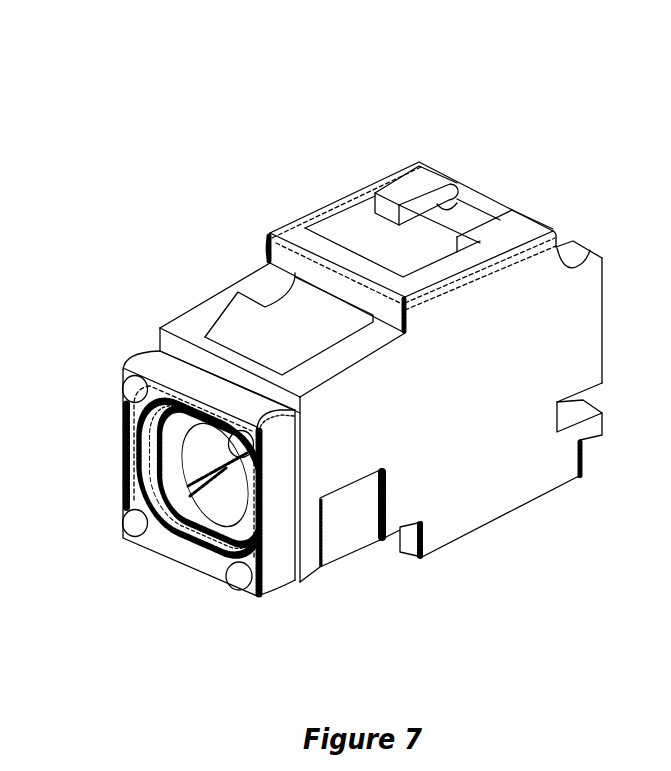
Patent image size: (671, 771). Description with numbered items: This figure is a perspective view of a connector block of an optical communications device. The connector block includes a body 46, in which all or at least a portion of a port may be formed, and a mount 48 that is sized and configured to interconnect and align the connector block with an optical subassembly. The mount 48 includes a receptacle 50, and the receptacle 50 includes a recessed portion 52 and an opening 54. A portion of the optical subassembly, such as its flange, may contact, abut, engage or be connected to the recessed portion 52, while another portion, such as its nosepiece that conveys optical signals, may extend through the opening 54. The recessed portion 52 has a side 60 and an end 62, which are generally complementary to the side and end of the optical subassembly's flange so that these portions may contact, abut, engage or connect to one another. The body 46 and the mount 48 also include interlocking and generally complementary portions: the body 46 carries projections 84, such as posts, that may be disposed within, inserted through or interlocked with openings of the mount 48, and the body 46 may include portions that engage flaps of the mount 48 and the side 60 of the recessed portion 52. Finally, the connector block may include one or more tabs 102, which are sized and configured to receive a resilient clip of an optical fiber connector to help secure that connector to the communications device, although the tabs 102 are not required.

The body 46 is at (227, 309).
The mount 48 is at (152, 363).
The projections 84 is at (128, 394).
The receptacle 50 is at (120, 438).
The recessed portion 52 is at (145, 460).
The opening 54 is at (204, 492).
The side 60 is at (177, 520).
The end 62 is at (173, 470).
The tabs 102 is at (520, 210).